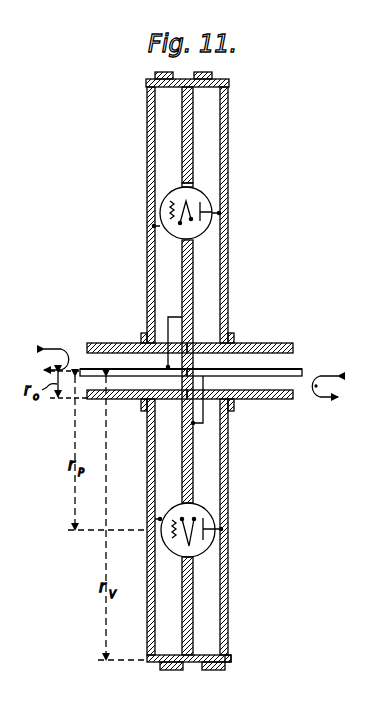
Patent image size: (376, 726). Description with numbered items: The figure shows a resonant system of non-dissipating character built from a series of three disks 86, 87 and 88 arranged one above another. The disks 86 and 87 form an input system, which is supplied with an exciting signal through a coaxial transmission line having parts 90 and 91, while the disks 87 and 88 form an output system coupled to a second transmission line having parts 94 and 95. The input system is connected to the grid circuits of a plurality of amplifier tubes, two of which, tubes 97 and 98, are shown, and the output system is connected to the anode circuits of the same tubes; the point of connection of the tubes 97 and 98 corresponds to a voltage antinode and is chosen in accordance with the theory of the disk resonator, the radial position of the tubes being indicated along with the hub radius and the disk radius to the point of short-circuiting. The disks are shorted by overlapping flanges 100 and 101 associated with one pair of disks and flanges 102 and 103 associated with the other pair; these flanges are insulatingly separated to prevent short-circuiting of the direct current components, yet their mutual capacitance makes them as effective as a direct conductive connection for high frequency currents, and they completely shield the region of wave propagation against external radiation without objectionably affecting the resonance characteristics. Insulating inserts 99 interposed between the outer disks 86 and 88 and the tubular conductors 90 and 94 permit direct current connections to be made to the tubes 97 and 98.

The disk 86 is at (147, 140).
The disk 87 is at (182, 160).
The disk 88 is at (228, 139).
The coaxial transmission line part 90 is at (112, 343).
The coaxial transmission line part 91 is at (83, 369).
The second transmission line part 94 is at (259, 343).
The second transmission line part 95 is at (298, 369).
The amplifier tube 97 is at (209, 206).
The amplifier tube 98 is at (213, 513).
The insulating insert 99 is at (144, 405).
The overlapping flange 100 is at (151, 662).
The overlapping flange 101 is at (170, 670).
The overlapping flange 102 is at (215, 670).
The overlapping flange 103 is at (228, 662).